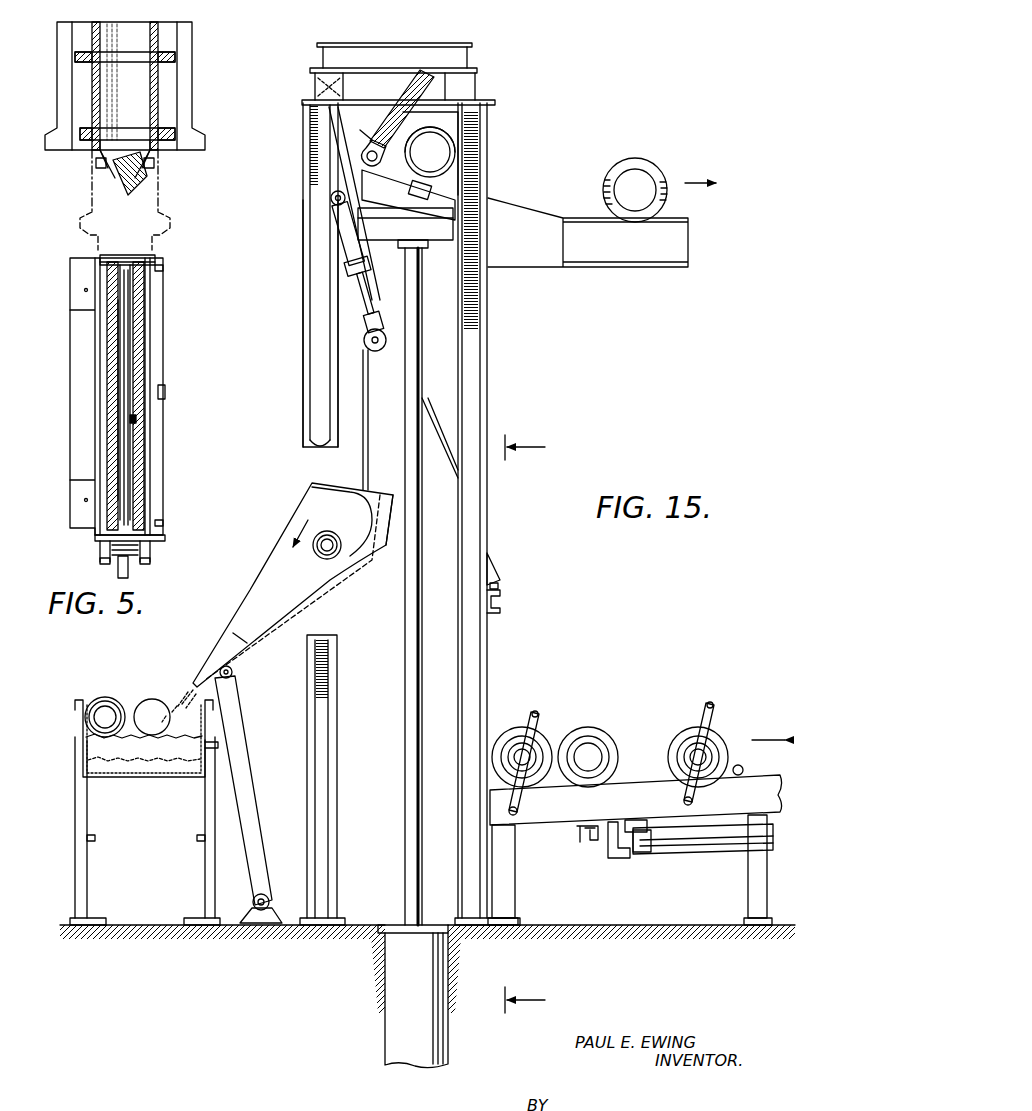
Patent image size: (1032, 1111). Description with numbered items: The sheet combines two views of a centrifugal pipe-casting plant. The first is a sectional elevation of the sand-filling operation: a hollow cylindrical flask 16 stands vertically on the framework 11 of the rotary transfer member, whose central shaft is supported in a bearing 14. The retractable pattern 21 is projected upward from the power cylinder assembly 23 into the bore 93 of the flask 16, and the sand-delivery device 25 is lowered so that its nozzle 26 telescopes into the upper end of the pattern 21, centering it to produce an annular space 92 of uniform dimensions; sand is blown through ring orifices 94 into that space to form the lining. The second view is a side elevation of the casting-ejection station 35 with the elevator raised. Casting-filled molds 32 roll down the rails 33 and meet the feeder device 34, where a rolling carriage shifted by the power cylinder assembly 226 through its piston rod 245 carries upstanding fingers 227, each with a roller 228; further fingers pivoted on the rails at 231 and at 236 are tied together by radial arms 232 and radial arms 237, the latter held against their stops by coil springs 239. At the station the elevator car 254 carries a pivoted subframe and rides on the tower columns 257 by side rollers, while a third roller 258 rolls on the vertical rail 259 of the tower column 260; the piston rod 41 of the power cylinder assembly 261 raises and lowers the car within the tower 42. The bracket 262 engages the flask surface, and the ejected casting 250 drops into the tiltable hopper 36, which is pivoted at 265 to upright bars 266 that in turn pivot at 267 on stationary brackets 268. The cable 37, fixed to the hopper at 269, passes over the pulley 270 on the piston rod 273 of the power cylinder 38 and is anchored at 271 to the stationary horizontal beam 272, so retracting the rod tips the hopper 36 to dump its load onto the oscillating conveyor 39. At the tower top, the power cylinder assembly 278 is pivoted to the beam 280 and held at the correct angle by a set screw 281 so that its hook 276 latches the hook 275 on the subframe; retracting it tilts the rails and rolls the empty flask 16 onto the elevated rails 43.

In FIG. 5, the sand-delivery device 25 is at (90, 90).
In FIG. 5, the nozzle 26 is at (106, 174).
In FIG. 5, the ring orifices 94 is at (140, 170).
In FIG. 5, the framework 11 is at (150, 300).
In FIG. 5, the flask 16 is at (146, 337).
In FIG. 15, the flask 16 is at (634, 160).
In FIG. 5, the pattern 21 is at (126, 361).
In FIG. 5, the bore 93 is at (136, 421).
In FIG. 5, the annular space 92 is at (144, 445).
In FIG. 5, the power cylinder assembly 23 is at (128, 571).
In FIG. 15, the power cylinder assembly 278 is at (383, 112).
In FIG. 15, the set screw 281 is at (440, 78).
In FIG. 15, the beam 280 is at (462, 81).
In FIG. 15, the bracket 262 is at (455, 118).
In FIG. 15, the hook 275 is at (430, 152).
In FIG. 15, the hook 276 is at (365, 148).
In FIG. 15, the power cylinder 38 is at (340, 168).
In FIG. 15, the tower 42 is at (300, 120).
In FIG. 15, the third roller 258 is at (330, 205).
In FIG. 15, the elevator car 254 is at (455, 233).
In FIG. 15, the upper rails 43 is at (656, 262).
In FIG. 15, the piston rod 273 is at (370, 297).
In FIG. 15, the pulley 270 is at (364, 335).
In FIG. 15, the tower column 260 is at (303, 350).
In FIG. 15, the tower columns 257 is at (488, 376).
In FIG. 15, the bearing 14 is at (538, 724).
In FIG. 15, the cable 37 is at (362, 464).
In FIG. 15, the casting 250 is at (303, 518).
In FIG. 15, the tiltable hopper 36 is at (262, 590).
In FIG. 15, the cable attachment point 269 is at (388, 545).
In FIG. 15, the cable fixing point 271 is at (500, 575).
In FIG. 15, the stationary horizontal beam 272 is at (500, 608).
In FIG. 15, the oscillating conveyor 39 is at (118, 694).
In FIG. 15, the hopper pivot 265 is at (233, 673).
In FIG. 15, the vertical rail 259 is at (338, 703).
In FIG. 15, the upright bars 266 is at (246, 770).
In FIG. 15, the bar pivot 267 is at (264, 893).
In FIG. 15, the piston rod 41 is at (404, 845).
In FIG. 15, the radial arms 237 is at (530, 712).
In FIG. 15, the casting-filled mold 32 is at (546, 722).
In FIG. 15, the feeder device 34 is at (616, 722).
In FIG. 15, the radial arms 232 is at (706, 704).
In FIG. 15, the roller 228 is at (742, 768).
In FIG. 15, the finger pivot 231 is at (683, 801).
In FIG. 15, the upstanding fingers 227 is at (732, 777).
In FIG. 15, the rails 33 is at (636, 832).
In FIG. 15, the finger pivot 236 is at (517, 822).
In FIG. 15, the coil springs 239 is at (580, 840).
In FIG. 15, the piston rod 245 is at (630, 850).
In FIG. 15, the power cylinder assembly 226 is at (725, 850).
In FIG. 15, the stationary brackets 268 is at (264, 925).
In FIG. 15, the casting-ejection station 35 is at (368, 920).
In FIG. 15, the power cylinder assembly 261 is at (440, 970).